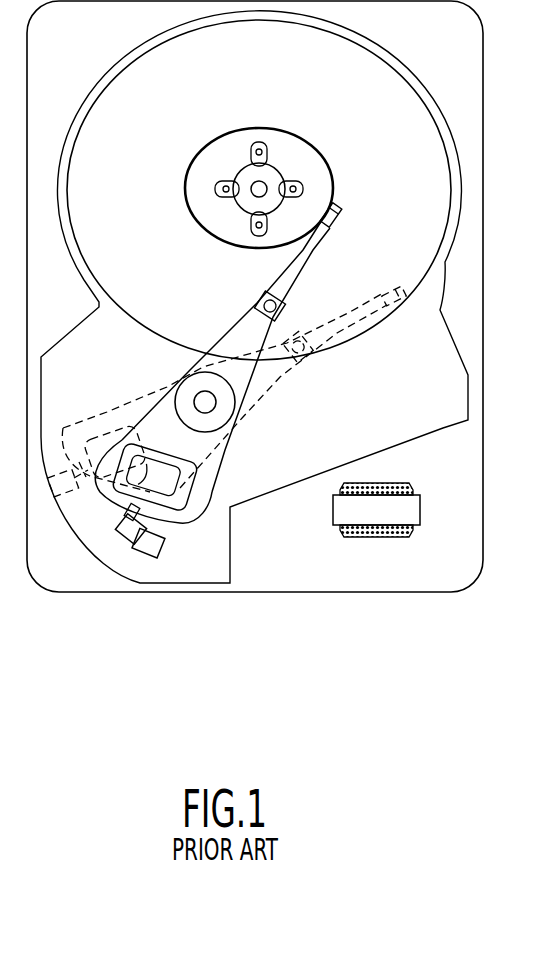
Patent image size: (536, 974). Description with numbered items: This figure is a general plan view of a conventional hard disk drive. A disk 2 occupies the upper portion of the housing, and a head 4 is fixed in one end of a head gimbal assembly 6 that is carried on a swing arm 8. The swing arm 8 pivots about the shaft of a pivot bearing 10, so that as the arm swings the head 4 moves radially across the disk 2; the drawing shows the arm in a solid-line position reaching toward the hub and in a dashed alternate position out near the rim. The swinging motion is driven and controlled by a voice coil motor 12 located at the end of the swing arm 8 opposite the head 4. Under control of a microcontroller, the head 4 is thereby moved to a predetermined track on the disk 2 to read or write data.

The disk 2 is at (141, 165).
The head 4 is at (338, 224).
The head gimbal assembly 6 is at (358, 322).
The swing arm 8 is at (285, 377).
The pivot bearing 10 is at (232, 410).
The voice coil motor 12 is at (172, 518).